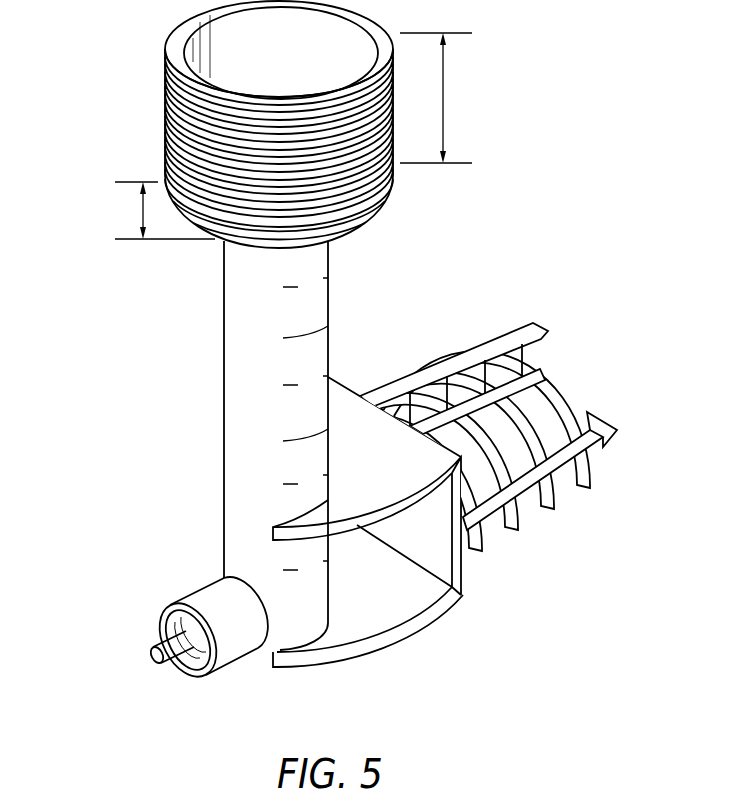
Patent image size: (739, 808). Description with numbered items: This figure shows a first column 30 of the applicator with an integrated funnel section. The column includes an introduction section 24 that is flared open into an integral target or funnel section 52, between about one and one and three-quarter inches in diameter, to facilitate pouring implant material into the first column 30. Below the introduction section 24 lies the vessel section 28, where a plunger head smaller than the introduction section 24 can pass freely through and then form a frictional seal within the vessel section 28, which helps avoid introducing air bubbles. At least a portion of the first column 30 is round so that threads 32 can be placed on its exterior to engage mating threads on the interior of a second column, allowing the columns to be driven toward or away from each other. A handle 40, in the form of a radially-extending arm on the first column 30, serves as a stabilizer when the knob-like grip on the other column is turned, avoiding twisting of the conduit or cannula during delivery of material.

The introduction section 24 is at (358, 208).
The vessel section 28 is at (233, 397).
The first column 30 is at (108, 276).
The threads 32 is at (368, 152).
The handle 40 is at (547, 493).
The funnel section 52 is at (165, 110).